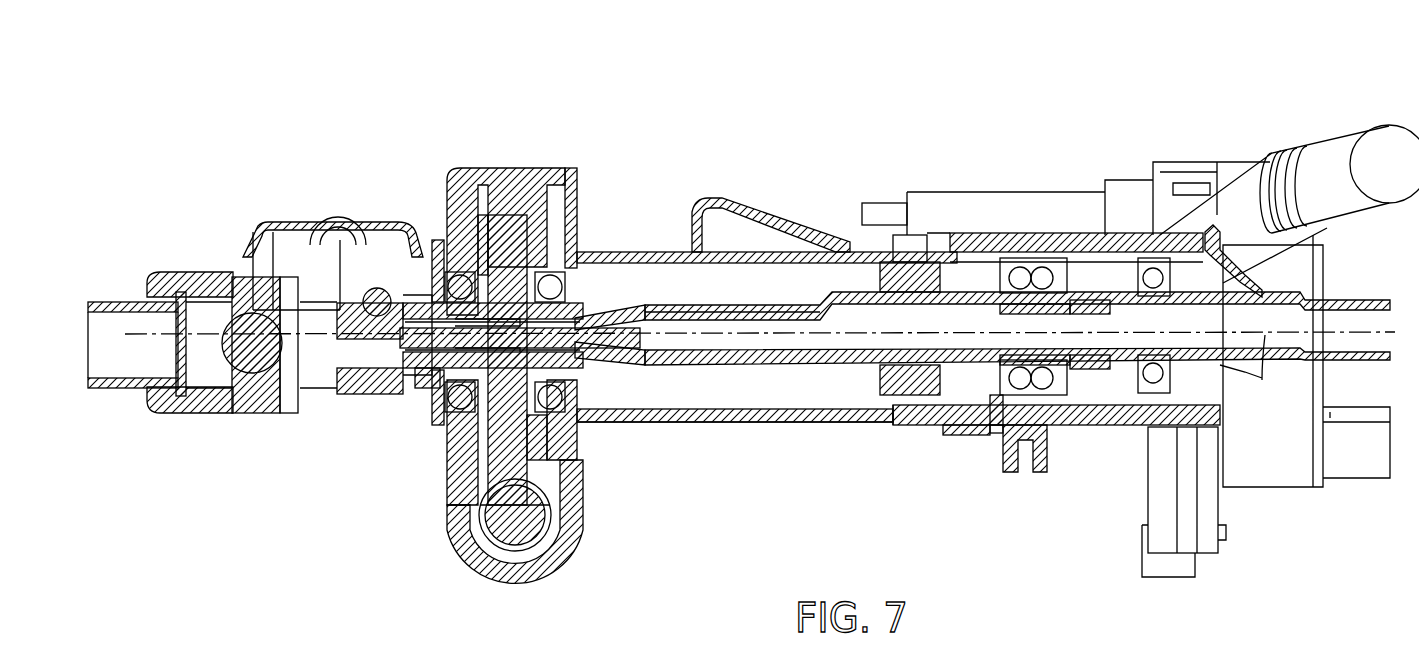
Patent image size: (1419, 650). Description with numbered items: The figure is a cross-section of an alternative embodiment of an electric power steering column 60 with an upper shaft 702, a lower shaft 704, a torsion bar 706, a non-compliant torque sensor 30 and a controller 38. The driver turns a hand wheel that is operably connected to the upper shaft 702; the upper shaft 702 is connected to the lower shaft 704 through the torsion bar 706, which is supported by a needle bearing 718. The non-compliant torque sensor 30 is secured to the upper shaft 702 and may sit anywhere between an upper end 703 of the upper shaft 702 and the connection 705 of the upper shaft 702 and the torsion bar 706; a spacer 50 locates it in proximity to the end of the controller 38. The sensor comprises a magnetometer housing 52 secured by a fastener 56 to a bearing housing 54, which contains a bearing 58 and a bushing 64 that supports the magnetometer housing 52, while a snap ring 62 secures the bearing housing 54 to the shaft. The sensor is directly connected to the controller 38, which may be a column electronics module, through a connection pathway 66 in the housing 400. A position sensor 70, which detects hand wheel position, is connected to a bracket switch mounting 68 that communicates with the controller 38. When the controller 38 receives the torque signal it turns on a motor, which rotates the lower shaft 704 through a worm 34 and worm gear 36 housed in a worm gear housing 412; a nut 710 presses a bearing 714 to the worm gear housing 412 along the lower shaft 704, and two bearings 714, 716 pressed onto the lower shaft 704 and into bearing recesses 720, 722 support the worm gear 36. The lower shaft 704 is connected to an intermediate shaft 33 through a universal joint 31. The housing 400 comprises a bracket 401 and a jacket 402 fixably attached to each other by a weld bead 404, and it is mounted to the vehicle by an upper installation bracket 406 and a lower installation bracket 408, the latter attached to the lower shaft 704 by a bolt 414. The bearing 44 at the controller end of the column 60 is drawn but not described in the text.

The non-compliant torque sensor 30 is at (905, 390).
The universal joint 31 is at (245, 413).
The intermediate shaft 33 is at (118, 388).
The worm 34 is at (485, 540).
The worm gear 36 is at (510, 222).
The controller 38 is at (985, 205).
The bearing 44 is at (1155, 268).
The spacer 50 is at (1075, 280).
The magnetometer housing 52 is at (880, 425).
The bearing housing 54 is at (992, 433).
The fastener 56 is at (960, 430).
The bearing 58 is at (1027, 472).
The steering column 60 is at (1127, 92).
The snap ring 62 is at (1058, 395).
The bushing 64 is at (1080, 395).
The connection pathway 66 is at (910, 232).
The bracket switch mounting 68 is at (1130, 425).
The position sensor 70 is at (1273, 475).
The housing 400 is at (718, 425).
The bracket 401 is at (568, 180).
The jacket 402 is at (775, 425).
The weld bead 404 is at (577, 255).
The upper installation bracket 406 is at (770, 215).
The lower installation bracket 408 is at (300, 230).
The worm gear housing 412 is at (450, 500).
The bolt 414 is at (388, 300).
The upper shaft 702 is at (690, 425).
The upper end 703 is at (1268, 322).
The lower shaft 704 is at (410, 400).
The connection 705 is at (648, 330).
The torsion bar 706 is at (625, 318).
The nut 710 is at (434, 250).
The bearing 714 is at (447, 250).
The bearing 716 is at (545, 393).
The needle bearing 718 is at (484, 260).
The bearing recess 720 is at (450, 418).
The bearing recess 722 is at (550, 420).